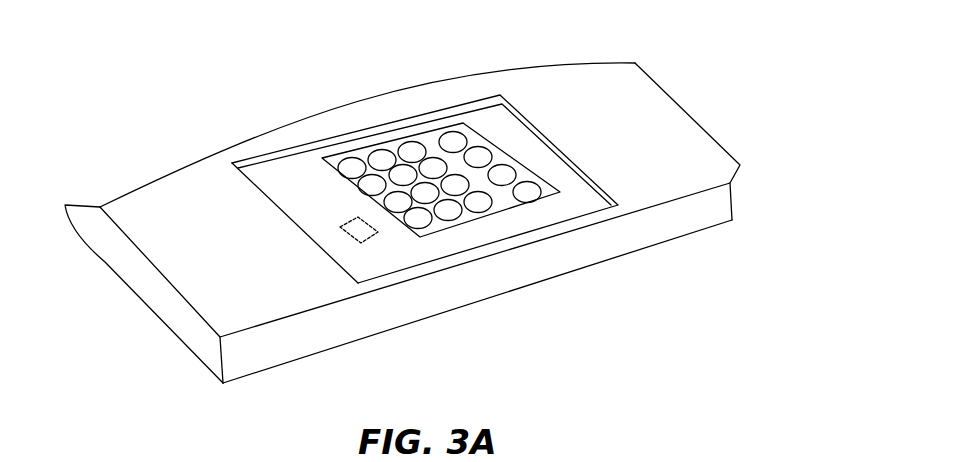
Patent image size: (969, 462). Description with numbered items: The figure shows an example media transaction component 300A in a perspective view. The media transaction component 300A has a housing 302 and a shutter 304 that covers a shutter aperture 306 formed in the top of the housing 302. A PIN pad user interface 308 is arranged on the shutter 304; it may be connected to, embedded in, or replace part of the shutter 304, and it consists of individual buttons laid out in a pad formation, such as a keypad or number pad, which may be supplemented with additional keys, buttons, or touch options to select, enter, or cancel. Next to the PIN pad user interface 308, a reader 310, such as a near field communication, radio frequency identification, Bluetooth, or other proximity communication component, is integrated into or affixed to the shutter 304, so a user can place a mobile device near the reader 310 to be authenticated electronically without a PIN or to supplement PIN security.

The media transaction component 300A is at (744, 43).
The housing 302 is at (166, 171).
The shutter 304 is at (535, 130).
The shutter aperture 306 is at (277, 190).
The PIN pad user interface 308 is at (335, 157).
The reader 310 is at (350, 230).